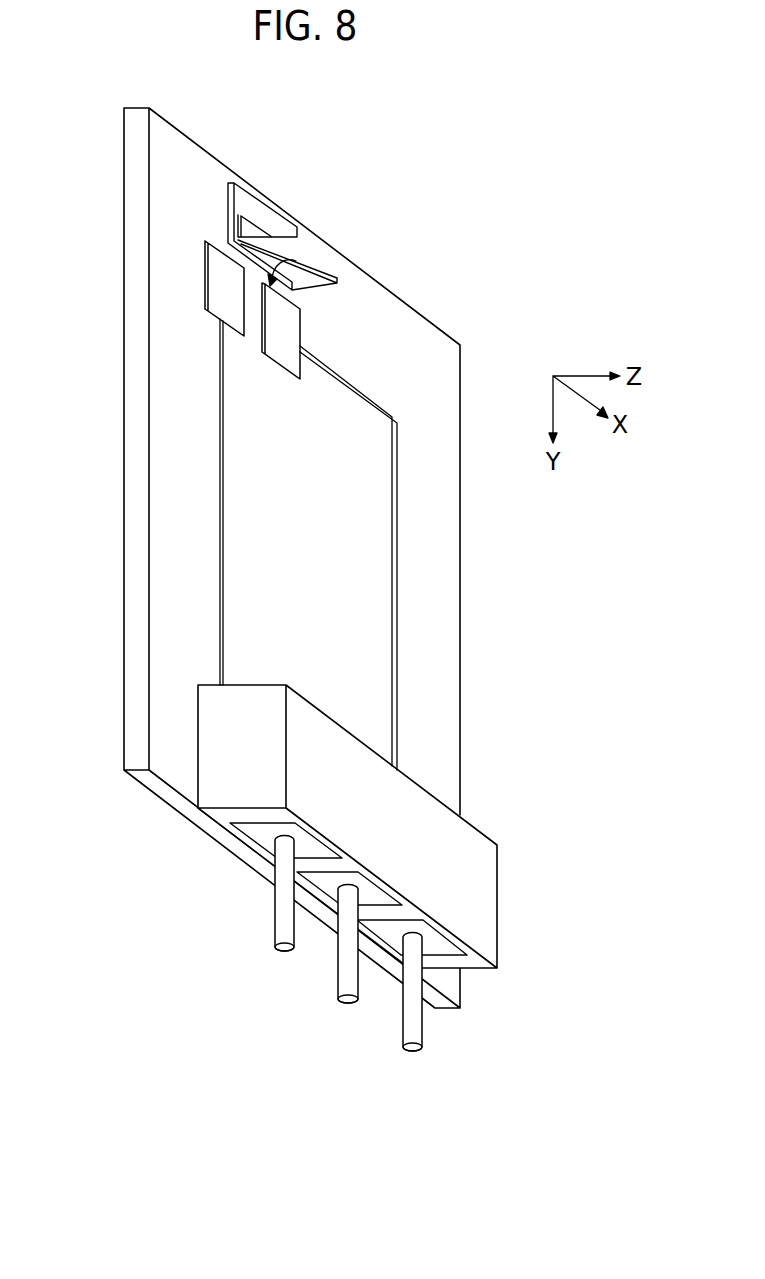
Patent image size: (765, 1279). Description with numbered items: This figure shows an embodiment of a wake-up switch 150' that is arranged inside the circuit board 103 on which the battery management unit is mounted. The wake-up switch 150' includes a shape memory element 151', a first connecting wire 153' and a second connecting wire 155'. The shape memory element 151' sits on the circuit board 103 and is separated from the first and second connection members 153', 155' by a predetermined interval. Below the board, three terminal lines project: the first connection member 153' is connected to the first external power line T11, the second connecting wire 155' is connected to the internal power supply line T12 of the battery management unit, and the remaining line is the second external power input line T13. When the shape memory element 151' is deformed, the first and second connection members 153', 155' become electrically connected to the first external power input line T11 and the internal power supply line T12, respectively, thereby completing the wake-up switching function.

The circuit board 103 is at (420, 311).
The wake-up switch 150' is at (411, 114).
The shape memory element 151' is at (309, 236).
The first connecting wire 153' is at (149, 463).
The second connecting wire 155' is at (225, 526).
The first external power line T11 is at (284, 951).
The internal power supply line T12 is at (348, 1003).
The second external power input line T13 is at (412, 1051).